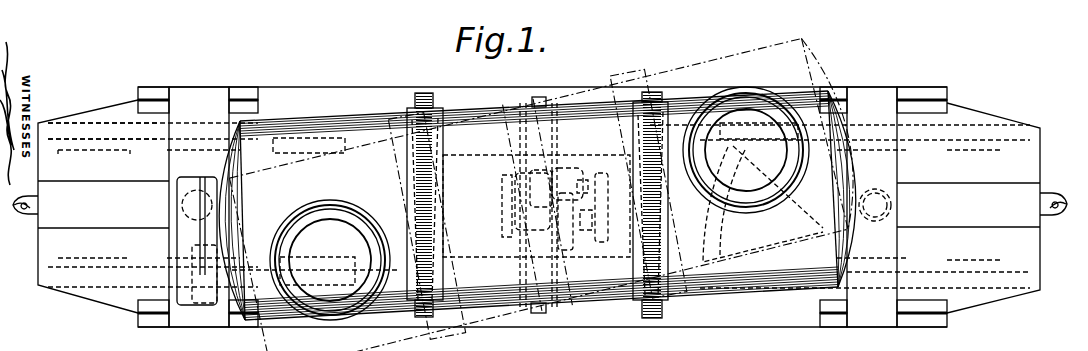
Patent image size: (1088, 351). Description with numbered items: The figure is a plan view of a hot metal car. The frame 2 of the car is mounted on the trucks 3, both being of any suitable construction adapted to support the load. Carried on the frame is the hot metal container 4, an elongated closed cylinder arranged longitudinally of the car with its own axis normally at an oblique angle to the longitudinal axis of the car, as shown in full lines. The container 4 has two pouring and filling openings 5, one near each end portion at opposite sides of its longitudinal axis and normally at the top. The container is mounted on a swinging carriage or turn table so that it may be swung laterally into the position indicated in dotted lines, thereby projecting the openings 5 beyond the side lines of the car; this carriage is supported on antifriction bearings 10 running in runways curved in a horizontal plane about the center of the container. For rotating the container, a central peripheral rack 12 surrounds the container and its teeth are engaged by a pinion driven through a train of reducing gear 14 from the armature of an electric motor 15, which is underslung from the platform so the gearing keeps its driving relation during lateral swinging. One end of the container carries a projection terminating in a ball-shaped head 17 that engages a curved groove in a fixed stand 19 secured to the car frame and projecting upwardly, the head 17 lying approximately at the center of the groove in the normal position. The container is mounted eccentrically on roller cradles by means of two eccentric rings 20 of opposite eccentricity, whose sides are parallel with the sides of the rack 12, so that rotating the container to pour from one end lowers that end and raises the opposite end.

The frame 2 is at (311, 87).
The trucks 3 is at (106, 151).
The hot metal container 4 is at (758, 284).
The pouring and filling openings 5 is at (756, 81).
The antifriction bearings 10 is at (406, 205).
The central peripheral rack 12 is at (538, 97).
The train of reducing gear 14 is at (502, 197).
The electric motor 15 is at (569, 170).
The ball-shaped head 17 is at (197, 252).
The fixed stand 19 is at (190, 253).
The eccentric rings 20 is at (425, 93).